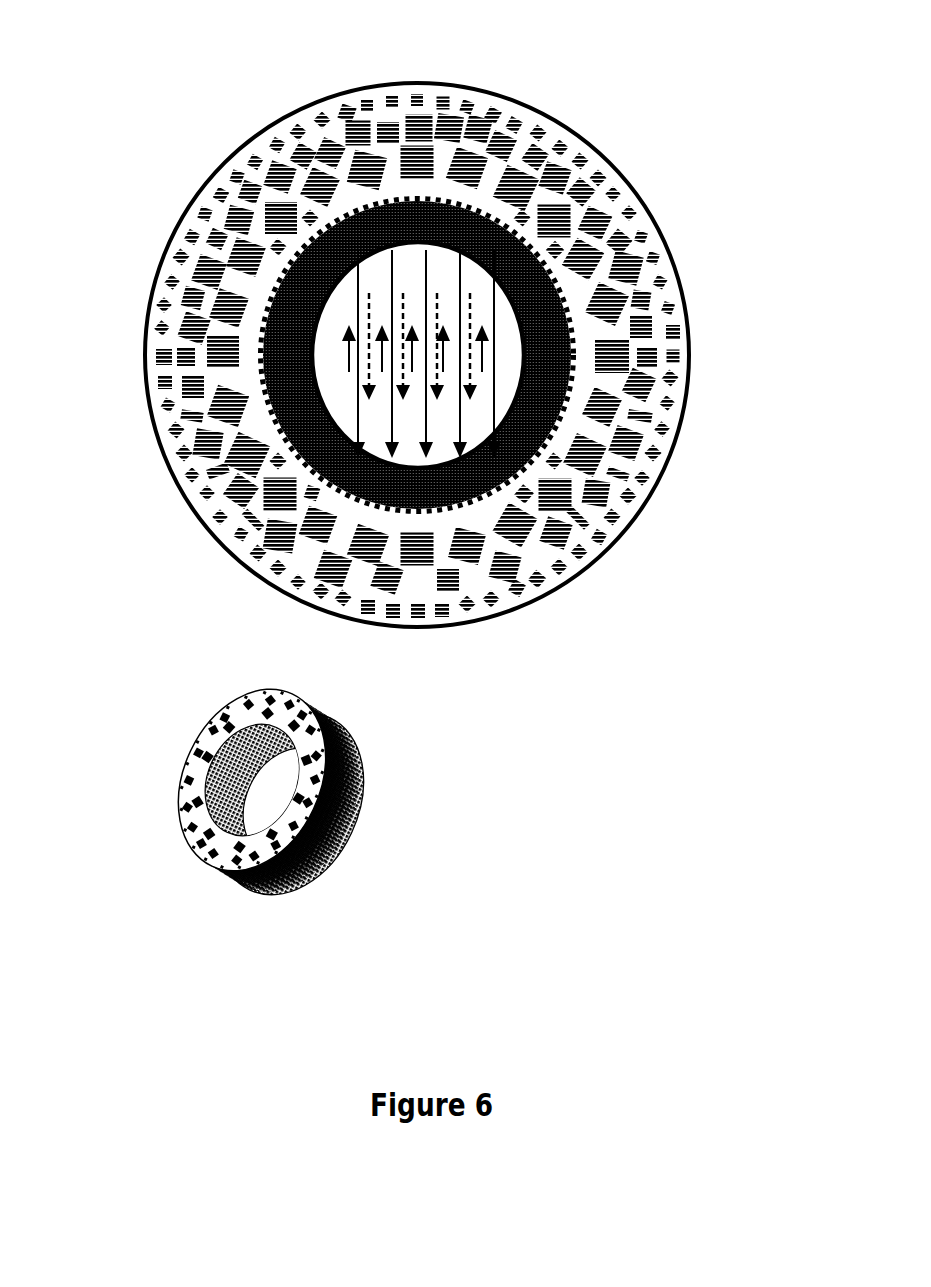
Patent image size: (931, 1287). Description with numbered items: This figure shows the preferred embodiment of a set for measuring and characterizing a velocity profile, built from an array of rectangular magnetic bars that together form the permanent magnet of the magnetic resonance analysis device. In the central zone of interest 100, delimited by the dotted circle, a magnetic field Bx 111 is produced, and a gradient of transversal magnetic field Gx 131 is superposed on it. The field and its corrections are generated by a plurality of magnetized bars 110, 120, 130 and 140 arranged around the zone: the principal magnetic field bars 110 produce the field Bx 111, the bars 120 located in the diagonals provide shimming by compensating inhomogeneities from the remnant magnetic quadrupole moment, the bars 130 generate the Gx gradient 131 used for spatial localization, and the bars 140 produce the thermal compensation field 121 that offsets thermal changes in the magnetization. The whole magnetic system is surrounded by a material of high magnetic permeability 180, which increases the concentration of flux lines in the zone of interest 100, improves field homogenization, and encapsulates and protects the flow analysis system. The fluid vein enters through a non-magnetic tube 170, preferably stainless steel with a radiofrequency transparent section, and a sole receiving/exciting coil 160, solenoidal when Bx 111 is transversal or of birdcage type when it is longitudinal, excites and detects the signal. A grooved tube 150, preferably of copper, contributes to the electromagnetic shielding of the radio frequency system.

The zone of interest 100 is at (428, 379).
The principal magnetic field bars 110 is at (552, 502).
The shimming bars 120 is at (627, 443).
The gradient bars 130 is at (652, 360).
The thermal compensation bars 140 is at (630, 212).
The grooved tube 150 is at (473, 497).
The receiving/exciting coil 160 is at (412, 470).
The non-magnetic tube 170 is at (440, 232).
The high magnetic permeability material 180 is at (650, 217).
The magnetic field Bx 111 is at (432, 412).
The thermal compensation field 121 is at (383, 337).
The Gx gradient 131 is at (403, 390).